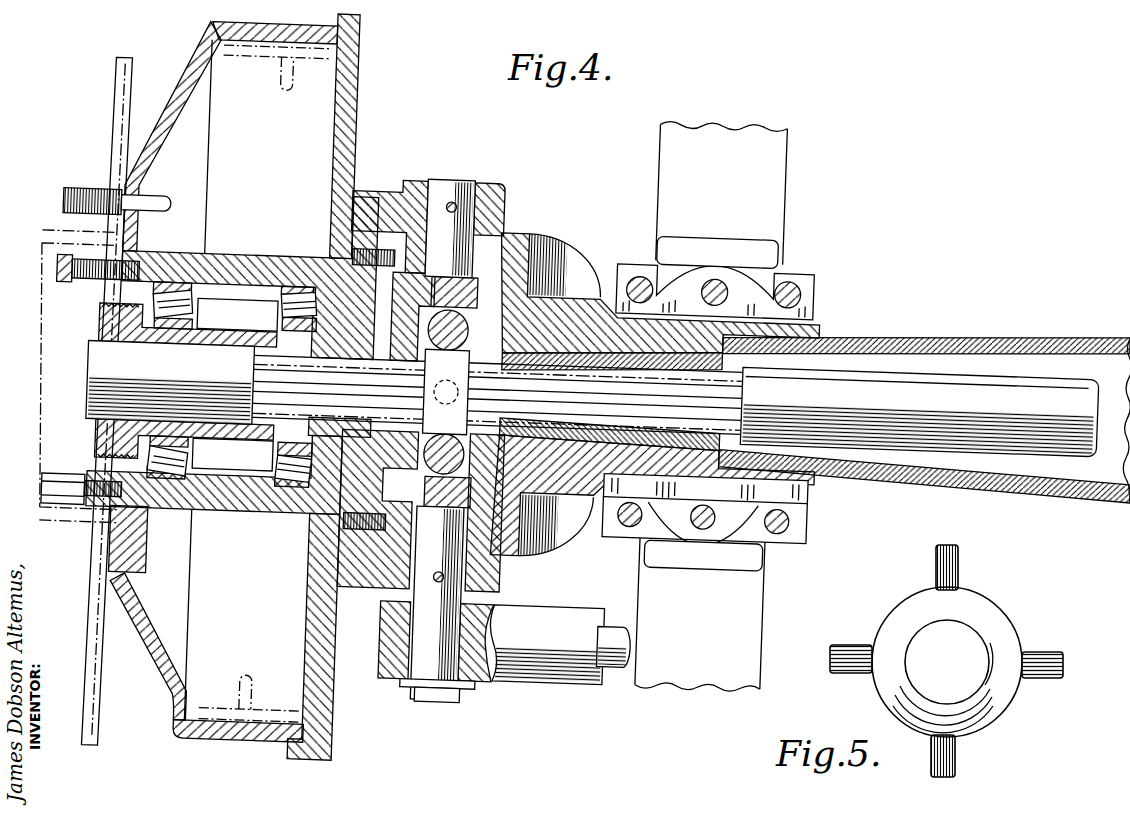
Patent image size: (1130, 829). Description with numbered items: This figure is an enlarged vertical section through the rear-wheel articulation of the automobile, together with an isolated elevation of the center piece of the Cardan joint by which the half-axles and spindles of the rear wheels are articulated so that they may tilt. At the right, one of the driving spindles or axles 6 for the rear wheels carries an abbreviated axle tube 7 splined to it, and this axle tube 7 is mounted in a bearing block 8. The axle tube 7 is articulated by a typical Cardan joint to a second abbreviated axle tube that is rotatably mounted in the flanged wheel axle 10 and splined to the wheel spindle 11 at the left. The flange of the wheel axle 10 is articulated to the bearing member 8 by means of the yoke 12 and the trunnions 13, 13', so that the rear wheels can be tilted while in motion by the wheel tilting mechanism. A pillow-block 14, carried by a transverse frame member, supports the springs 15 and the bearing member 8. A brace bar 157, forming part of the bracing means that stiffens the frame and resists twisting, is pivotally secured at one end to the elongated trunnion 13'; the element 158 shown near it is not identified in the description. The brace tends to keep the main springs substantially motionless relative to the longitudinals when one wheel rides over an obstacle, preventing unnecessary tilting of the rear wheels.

The driving spindle 6 is at (928, 365).
The axle tube 7 is at (582, 356).
The bearing block 8 is at (688, 332).
The flanged wheel axle 10 is at (240, 441).
The wheel spindle 11 is at (109, 384).
The yoke 12 is at (492, 202).
The trunnion 13 is at (450, 214).
The elongated trunnion 13' is at (410, 604).
The pillow-block 14 is at (741, 279).
The springs 15 is at (753, 157).
The bar 157 is at (616, 667).
The bushing 158 is at (523, 672).